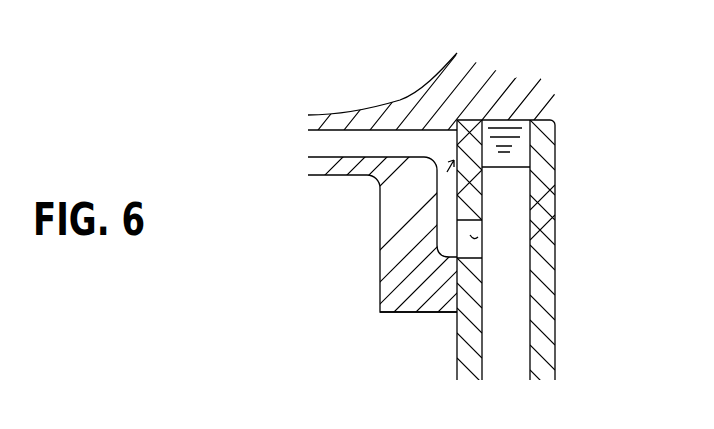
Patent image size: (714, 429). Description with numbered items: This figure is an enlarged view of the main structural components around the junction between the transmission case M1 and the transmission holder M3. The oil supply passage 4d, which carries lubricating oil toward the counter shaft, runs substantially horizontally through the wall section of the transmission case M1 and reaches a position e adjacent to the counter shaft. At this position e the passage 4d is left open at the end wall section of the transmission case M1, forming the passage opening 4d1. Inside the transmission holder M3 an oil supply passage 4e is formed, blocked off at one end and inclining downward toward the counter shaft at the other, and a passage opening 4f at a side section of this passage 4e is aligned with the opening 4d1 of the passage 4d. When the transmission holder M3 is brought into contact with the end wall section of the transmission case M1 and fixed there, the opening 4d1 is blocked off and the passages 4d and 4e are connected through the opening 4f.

The transmission case M1 is at (402, 113).
The position adjacent to the counter shaft e is at (503, 119).
The passage opening 4f is at (493, 232).
The oil supply passage 4e is at (508, 272).
The transmission holder M3 is at (540, 272).
The oil supply passage 4d is at (367, 148).
The passage opening 4d1 is at (388, 311).